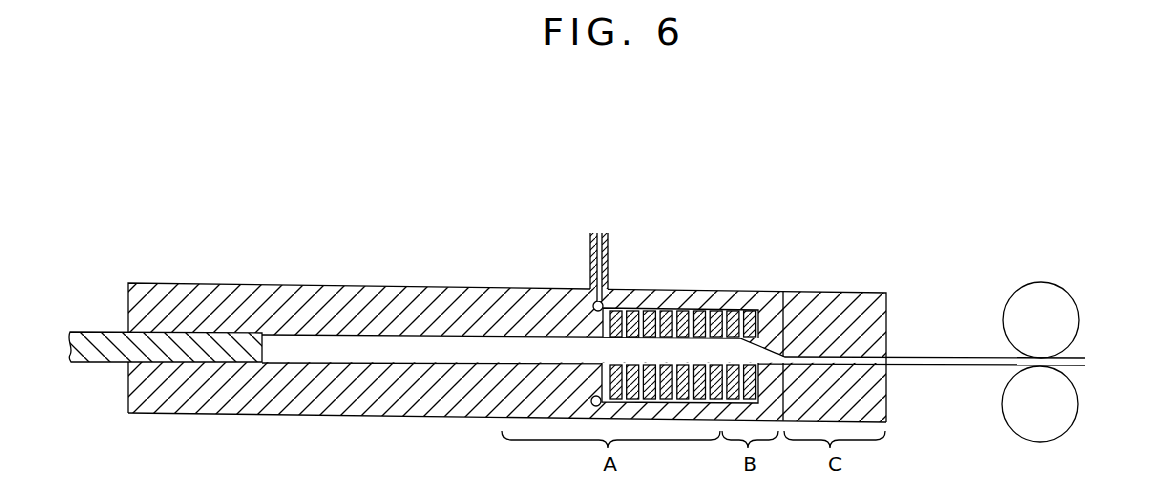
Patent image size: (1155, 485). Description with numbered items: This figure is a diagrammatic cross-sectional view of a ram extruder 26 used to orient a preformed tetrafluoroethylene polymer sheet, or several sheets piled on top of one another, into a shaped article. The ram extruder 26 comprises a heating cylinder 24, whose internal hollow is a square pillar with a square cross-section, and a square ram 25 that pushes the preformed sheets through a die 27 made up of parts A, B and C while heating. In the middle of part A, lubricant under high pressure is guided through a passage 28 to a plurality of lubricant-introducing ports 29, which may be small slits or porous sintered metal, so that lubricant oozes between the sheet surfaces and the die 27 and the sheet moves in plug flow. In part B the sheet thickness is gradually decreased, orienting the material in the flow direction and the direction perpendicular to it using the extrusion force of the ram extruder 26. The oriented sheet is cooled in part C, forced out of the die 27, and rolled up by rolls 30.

The heating cylinder 24 is at (315, 408).
The square ram 25 is at (212, 352).
The ram extruder 26 is at (455, 421).
The die 27 is at (771, 287).
The passage for introducing the lubricant 28 is at (609, 241).
The lubricant-introducing ports 29 is at (650, 312).
The rolls 30 is at (1069, 323).